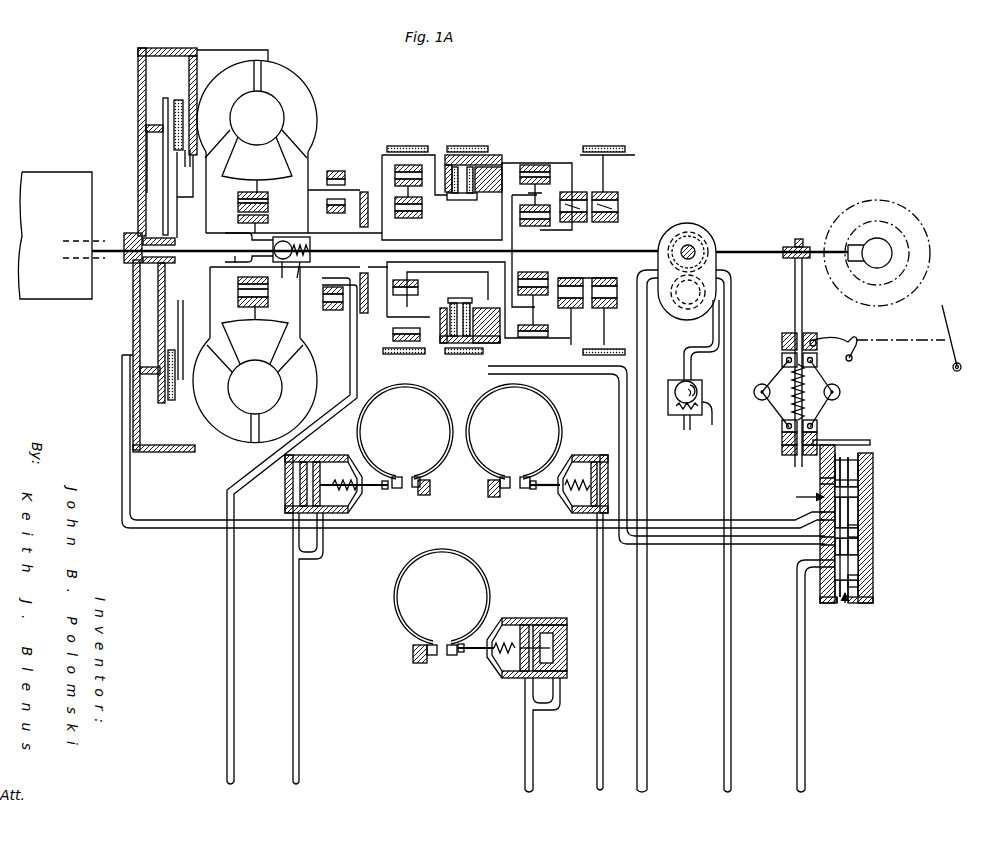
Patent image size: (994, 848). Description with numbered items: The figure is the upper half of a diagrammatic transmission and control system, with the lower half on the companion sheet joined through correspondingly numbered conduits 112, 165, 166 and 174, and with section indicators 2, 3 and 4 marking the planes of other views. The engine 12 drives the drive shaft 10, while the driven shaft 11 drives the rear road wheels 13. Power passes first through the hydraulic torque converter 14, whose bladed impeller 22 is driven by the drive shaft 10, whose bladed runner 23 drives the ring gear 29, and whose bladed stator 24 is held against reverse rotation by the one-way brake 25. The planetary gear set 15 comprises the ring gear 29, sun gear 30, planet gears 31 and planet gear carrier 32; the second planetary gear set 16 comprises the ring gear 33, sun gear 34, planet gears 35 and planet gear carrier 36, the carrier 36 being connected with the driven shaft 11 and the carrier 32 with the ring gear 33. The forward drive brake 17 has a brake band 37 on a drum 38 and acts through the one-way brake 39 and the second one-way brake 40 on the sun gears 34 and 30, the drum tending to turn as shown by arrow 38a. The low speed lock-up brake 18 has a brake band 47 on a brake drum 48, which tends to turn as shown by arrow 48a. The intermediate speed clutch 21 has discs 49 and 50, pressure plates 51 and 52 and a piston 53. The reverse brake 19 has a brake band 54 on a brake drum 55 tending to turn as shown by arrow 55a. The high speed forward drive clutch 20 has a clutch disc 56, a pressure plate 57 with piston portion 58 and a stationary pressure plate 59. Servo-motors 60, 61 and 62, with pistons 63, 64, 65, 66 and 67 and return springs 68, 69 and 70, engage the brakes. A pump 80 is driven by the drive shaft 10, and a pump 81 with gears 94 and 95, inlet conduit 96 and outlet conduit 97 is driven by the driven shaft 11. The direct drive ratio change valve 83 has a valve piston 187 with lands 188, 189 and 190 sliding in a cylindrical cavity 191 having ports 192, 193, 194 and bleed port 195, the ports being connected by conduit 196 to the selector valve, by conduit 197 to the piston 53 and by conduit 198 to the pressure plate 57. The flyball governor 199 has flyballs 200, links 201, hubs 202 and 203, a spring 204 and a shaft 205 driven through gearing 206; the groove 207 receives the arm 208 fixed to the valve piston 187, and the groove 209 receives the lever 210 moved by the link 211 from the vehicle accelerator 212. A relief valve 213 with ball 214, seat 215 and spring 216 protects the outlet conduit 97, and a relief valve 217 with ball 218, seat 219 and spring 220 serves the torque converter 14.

The section line 2- 2 is at (573, 98).
The section line 3- 3 is at (605, 115).
The section line 4- 4 is at (263, 192).
The drive shaft 10 is at (106, 250).
The driven shaft 11 is at (822, 245).
The engine 12 is at (55, 172).
The rear road wheels 13 is at (877, 200).
The hydraulic torque converter 14 is at (284, 58).
The planetary gear set 15 is at (381, 155).
The second planetary gear set 16 is at (540, 157).
The forward drive brake 17 is at (616, 146).
The low speed lock-up brake 18 is at (470, 145).
The reverse brake 19 is at (407, 145).
The high speed forward drive clutch 20 is at (177, 98).
The intermediate speed clutch 21 is at (446, 156).
The bladed impeller 22 is at (300, 95).
The bladed runner 23 is at (224, 88).
The bladed stator 24 is at (256, 142).
The one-way brake 25 is at (237, 206).
The ring gear 29 is at (385, 340).
The sun gear 30 is at (416, 290).
The planet gears 31 is at (395, 180).
The planet gear carrier 32 is at (400, 330).
The ring gear 33 is at (540, 339).
The sun gear 34 is at (540, 291).
The planet gears 35 is at (545, 192).
The planet gear carrier 36 is at (515, 248).
The brake band 37 is at (627, 148).
The drum 38 is at (633, 155).
The arrow 38a is at (532, 468).
The one-way brake 39 is at (619, 210).
The second one-way brake 40 is at (579, 191).
The brake band 47 is at (488, 146).
The brake drum 48 is at (502, 160).
The arrow 48a is at (451, 636).
The discs 49 is at (456, 200).
The discs 50 is at (457, 304).
The pressure plate 51 is at (447, 198).
The pressure plate 52 is at (472, 198).
The piston 53 is at (486, 308).
The brake band 54 is at (415, 355).
The brake drum 55 is at (383, 354).
The arrow 55a is at (376, 414).
The clutch disc 56 is at (163, 114).
The pressure plate 57 is at (170, 104).
The piston portion 58 is at (148, 136).
The pressure plate 59 is at (186, 275).
The servo-motor 60 is at (600, 454).
The servo-motor 61 is at (560, 617).
The servo-motor 62 is at (289, 491).
The piston 63 is at (590, 460).
The piston 64 is at (566, 630).
The piston 65 is at (522, 627).
The piston 66 is at (320, 460).
The piston 67 is at (305, 460).
The return spring 68 is at (565, 491).
The return spring 69 is at (495, 656).
The return spring 70 is at (352, 488).
The pump 80 is at (333, 313).
The pump 81 is at (698, 226).
The direct drive ratio change valve 83 is at (892, 497).
The gear 94 is at (710, 244).
The gear 95 is at (710, 298).
The inlet conduit 96 is at (647, 325).
The outlet conduit 97 is at (733, 280).
The conduit 112 is at (299, 760).
The conduit 165 is at (596, 783).
The conduit 166 is at (524, 775).
The conduit 174 is at (230, 752).
The valve piston 187 is at (847, 606).
The land 188 is at (860, 584).
The land 189 is at (856, 533).
The land 190 is at (871, 473).
The cylindrical cavity 191 is at (838, 605).
The port 192 is at (820, 571).
The port 193 is at (820, 549).
The port 194 is at (820, 516).
The bleed port 195 is at (821, 488).
The conduit 196 is at (806, 777).
The conduit 197 is at (666, 545).
The conduit 198 is at (126, 487).
The flyball governor 199 is at (866, 392).
The flyballs 200 is at (840, 397).
The links 201 is at (768, 400).
The hub 202 is at (782, 439).
The hub 203 is at (785, 333).
The spring 204 is at (794, 380).
The shaft 205 is at (803, 301).
The gearing 206 is at (792, 243).
The groove 207 is at (785, 448).
The arm 208 is at (871, 443).
The groove 209 is at (782, 346).
The lever 210 is at (857, 354).
The link 211 is at (912, 338).
The vehicle accelerator 212 is at (961, 353).
The relief valve 213 is at (712, 413).
The ball 214 is at (676, 385).
The seat 215 is at (697, 385).
The spring 216 is at (683, 418).
The relief valve 217 is at (247, 260).
The ball 218 is at (310, 247).
The seat 219 is at (268, 279).
The spring 220 is at (268, 298).